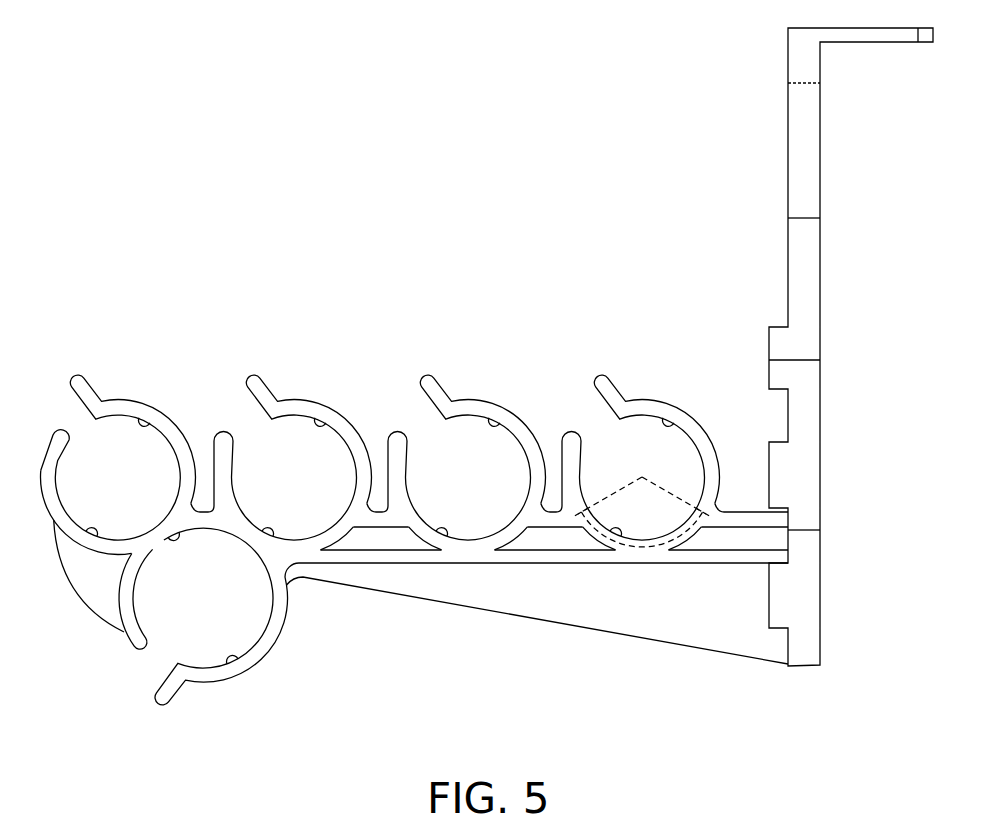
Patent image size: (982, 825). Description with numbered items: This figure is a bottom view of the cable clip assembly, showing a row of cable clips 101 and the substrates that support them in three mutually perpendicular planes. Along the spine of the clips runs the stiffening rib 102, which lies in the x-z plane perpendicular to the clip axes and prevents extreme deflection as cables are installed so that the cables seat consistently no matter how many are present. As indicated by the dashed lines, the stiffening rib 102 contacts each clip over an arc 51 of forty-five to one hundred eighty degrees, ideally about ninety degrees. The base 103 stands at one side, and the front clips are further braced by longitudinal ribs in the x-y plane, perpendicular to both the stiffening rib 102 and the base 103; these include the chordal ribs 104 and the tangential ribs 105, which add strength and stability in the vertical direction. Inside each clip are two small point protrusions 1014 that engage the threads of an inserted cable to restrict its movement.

The cable clips 101 is at (406, 383).
The point protrusions 1014 is at (487, 426).
The chordal ribs 104 is at (555, 520).
The stiffening rib 102 is at (745, 537).
The base 103 is at (788, 140).
The tangential ribs 105 is at (702, 553).
The arc 51 is at (652, 553).